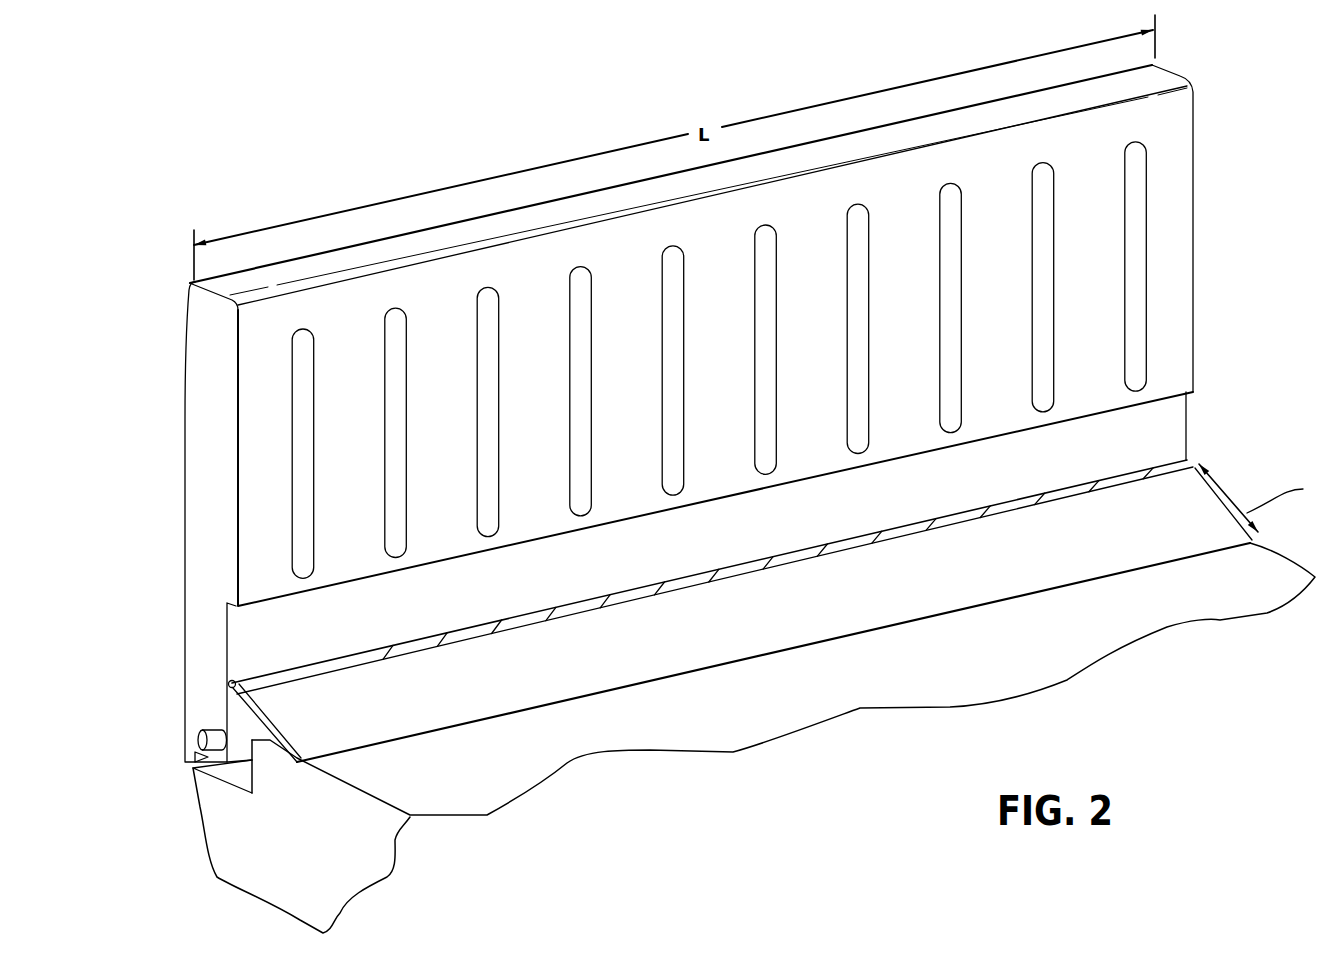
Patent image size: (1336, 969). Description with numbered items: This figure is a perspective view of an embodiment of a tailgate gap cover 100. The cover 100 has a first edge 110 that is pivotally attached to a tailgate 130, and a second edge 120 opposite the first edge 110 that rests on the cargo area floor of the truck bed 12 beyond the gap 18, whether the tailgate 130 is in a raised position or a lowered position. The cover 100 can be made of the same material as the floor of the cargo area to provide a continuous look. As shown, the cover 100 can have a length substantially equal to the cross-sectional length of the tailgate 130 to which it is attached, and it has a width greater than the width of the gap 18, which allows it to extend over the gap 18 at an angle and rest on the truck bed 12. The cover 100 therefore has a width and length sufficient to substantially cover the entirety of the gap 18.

The truck bed 12 is at (1063, 643).
The gap 18 is at (242, 770).
The tailgate gap cover 100 is at (1143, 540).
The first edge 110 is at (275, 698).
The second edge 120 is at (415, 737).
The tailgate 130 is at (252, 358).